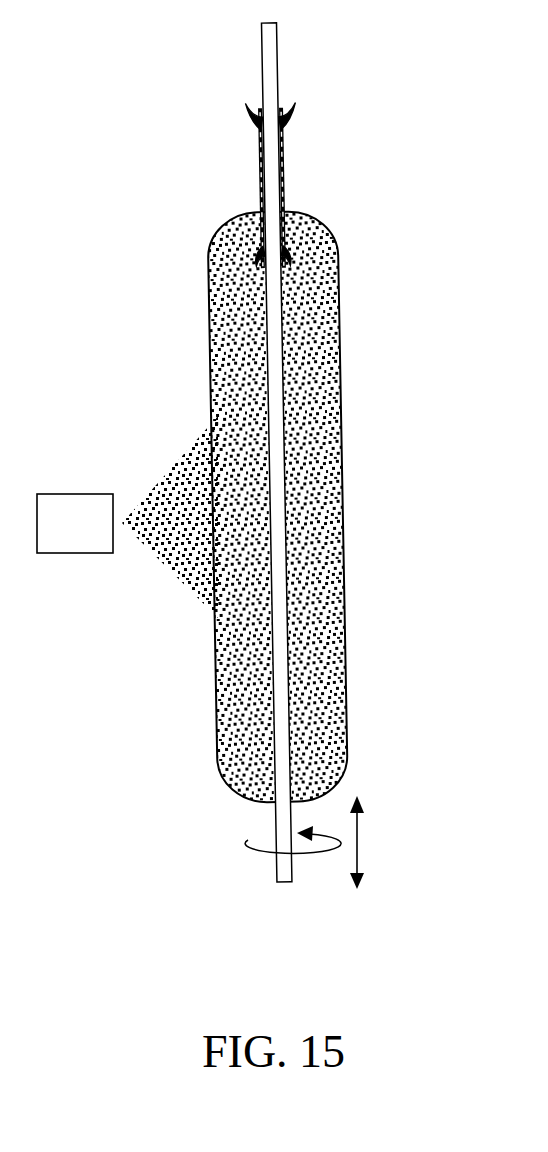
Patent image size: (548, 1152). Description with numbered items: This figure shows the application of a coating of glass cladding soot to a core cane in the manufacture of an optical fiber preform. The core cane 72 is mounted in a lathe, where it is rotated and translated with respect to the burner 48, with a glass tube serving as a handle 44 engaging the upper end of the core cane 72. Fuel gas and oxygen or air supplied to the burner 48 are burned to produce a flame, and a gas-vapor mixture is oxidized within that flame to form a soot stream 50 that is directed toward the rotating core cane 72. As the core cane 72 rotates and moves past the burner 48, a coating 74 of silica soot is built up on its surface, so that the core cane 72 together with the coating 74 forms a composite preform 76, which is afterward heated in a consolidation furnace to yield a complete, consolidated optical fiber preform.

The handle 44 is at (259, 177).
The burner 48 is at (75, 494).
The soot stream 50 is at (178, 569).
The core cane 72 is at (305, 651).
The coating 74 is at (341, 367).
The composite preform 76 is at (283, 455).